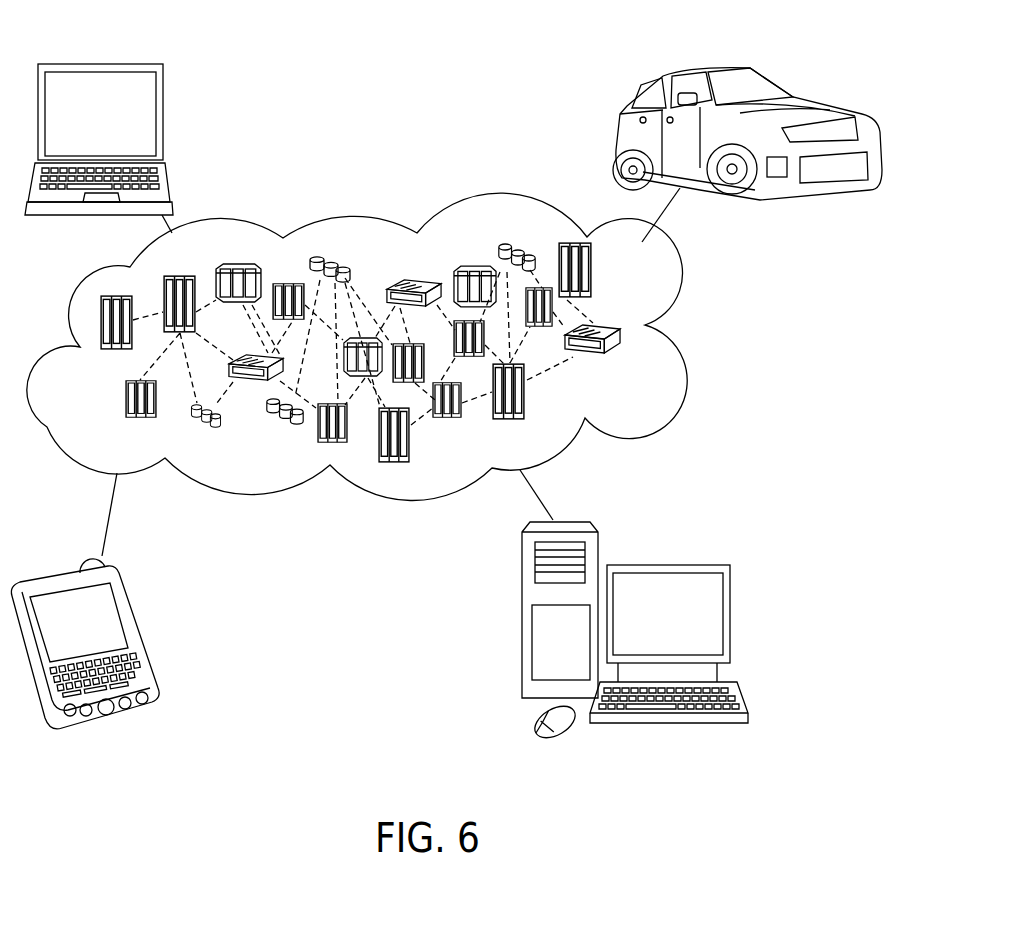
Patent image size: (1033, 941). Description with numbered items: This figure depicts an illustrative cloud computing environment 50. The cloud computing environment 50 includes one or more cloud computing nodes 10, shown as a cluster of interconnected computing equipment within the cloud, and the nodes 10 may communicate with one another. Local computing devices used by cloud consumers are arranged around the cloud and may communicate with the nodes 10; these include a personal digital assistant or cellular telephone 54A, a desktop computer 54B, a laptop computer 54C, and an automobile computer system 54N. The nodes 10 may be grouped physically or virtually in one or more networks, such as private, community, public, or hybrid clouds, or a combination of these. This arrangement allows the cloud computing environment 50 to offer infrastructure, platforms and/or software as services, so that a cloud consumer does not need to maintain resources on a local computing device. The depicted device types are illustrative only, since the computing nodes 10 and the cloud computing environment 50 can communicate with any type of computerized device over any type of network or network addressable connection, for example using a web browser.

The cloud computing nodes 10 is at (635, 373).
The cloud computing environment 50 is at (685, 283).
The personal digital assistant (PDA) or cellular telephone 54A is at (132, 613).
The desktop computer 54B is at (730, 613).
The laptop computer 54C is at (163, 118).
The automobile computer system 54N is at (795, 86).